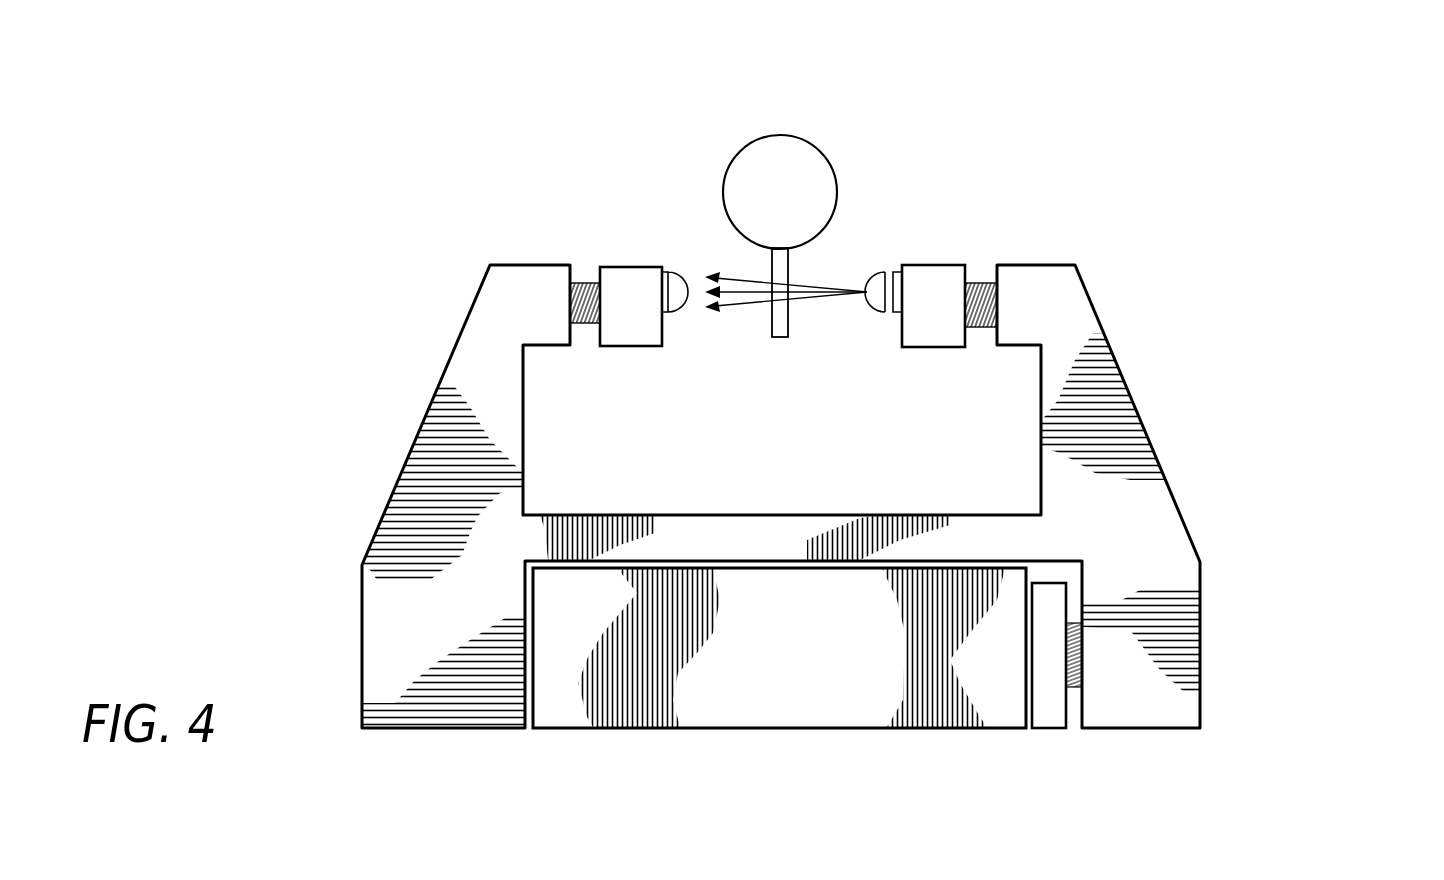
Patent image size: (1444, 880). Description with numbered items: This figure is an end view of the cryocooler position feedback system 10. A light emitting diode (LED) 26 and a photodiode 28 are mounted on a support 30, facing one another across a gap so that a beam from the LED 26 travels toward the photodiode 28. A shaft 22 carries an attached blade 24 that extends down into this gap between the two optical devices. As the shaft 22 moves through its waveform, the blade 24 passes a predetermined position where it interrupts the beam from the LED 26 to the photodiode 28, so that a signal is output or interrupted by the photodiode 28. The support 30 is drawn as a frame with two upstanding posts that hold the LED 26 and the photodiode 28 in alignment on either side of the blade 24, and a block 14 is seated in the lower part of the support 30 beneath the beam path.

The alignment apparatus 10 is at (1268, 193).
The work block 14 is at (952, 728).
The shaft 22 is at (781, 112).
The blade 24 is at (780, 360).
The light emitting diode (LED) 26 is at (886, 260).
The photodiode 28 is at (674, 252).
The support 30 is at (1180, 445).